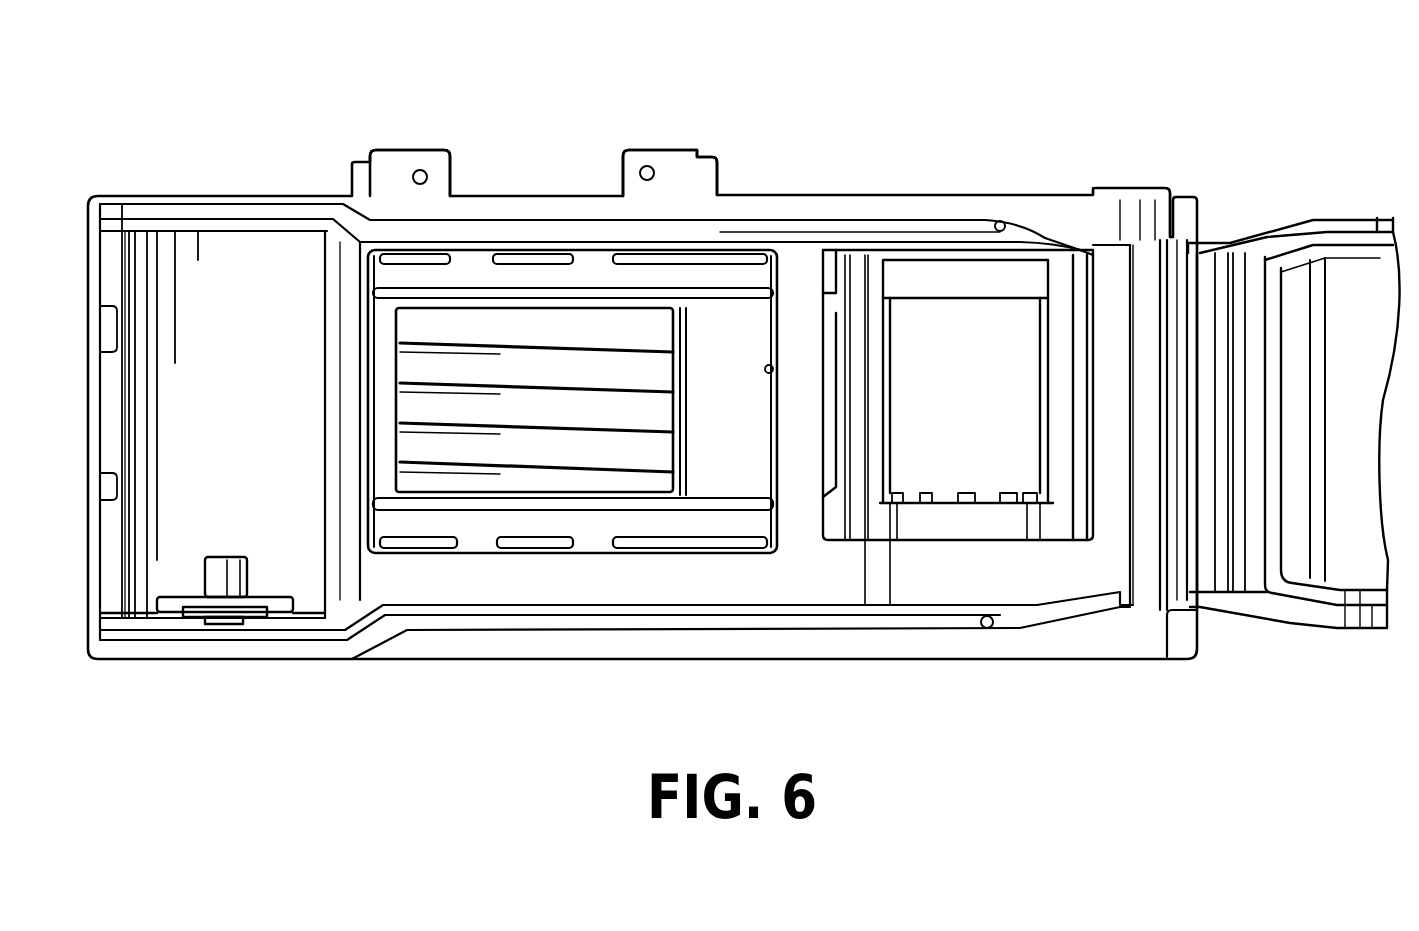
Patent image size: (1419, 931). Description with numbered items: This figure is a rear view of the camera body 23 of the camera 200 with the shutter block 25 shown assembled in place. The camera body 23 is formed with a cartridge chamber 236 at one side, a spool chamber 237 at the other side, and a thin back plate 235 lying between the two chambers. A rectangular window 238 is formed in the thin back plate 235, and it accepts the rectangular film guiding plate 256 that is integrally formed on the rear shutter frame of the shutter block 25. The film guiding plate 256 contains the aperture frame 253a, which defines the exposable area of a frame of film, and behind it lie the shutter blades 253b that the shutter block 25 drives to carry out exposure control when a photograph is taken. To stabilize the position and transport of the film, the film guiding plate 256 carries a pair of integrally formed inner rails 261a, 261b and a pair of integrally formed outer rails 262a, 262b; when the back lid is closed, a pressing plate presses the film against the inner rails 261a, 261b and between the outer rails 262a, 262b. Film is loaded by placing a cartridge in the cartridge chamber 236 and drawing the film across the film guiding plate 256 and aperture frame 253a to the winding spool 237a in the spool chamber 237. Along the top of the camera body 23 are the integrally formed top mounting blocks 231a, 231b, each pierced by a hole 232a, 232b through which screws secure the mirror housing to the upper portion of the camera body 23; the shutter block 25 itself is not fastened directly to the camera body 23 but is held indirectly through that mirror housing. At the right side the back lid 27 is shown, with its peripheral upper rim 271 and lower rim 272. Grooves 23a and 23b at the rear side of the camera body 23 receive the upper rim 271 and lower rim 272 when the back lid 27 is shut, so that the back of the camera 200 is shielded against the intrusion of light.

The camera 200 is at (1072, 149).
The camera body 23 is at (1097, 187).
The groove 23a is at (1000, 220).
The groove 23b is at (987, 628).
The shutter block 25 is at (775, 478).
The back lid 27 is at (1358, 228).
The upper rim 271 is at (1260, 232).
The lower rim 272 is at (1297, 620).
The top mounting block 231a is at (420, 157).
The top mounting block 231b is at (660, 153).
The hole 232a is at (433, 170).
The hole 232b is at (630, 167).
The thin back plate 235 is at (417, 580).
The cartridge chamber 236 is at (223, 243).
The spool chamber 237 is at (860, 258).
The winding spool 237a is at (940, 320).
The rectangular window 238 is at (773, 369).
The aperture frame 253a is at (400, 433).
The shutter blades 253b is at (400, 360).
The film guiding plate 256 is at (737, 407).
The inner rail 261a is at (708, 300).
The inner rail 261b is at (707, 500).
The outer rail 262a is at (623, 253).
The outer rail 262b is at (647, 545).